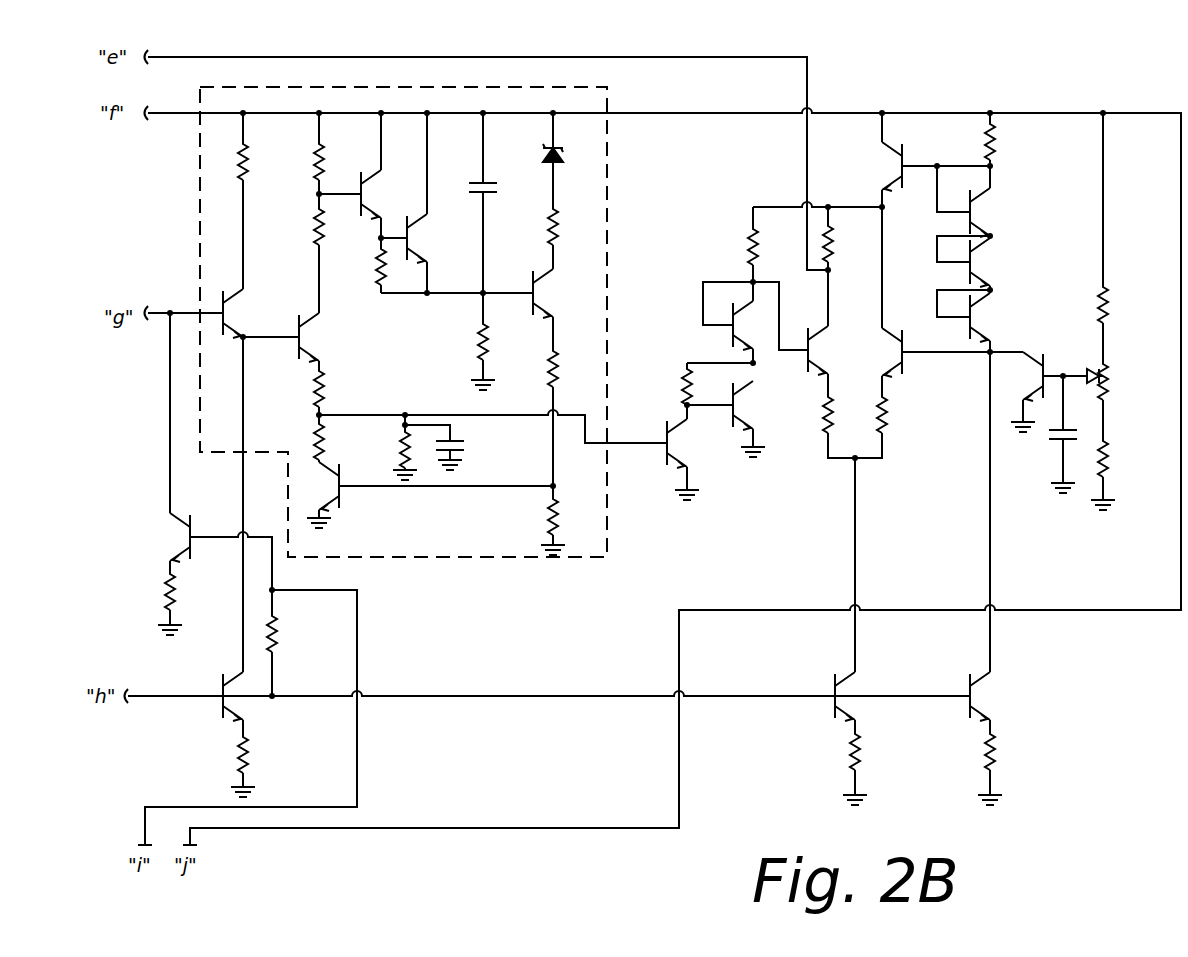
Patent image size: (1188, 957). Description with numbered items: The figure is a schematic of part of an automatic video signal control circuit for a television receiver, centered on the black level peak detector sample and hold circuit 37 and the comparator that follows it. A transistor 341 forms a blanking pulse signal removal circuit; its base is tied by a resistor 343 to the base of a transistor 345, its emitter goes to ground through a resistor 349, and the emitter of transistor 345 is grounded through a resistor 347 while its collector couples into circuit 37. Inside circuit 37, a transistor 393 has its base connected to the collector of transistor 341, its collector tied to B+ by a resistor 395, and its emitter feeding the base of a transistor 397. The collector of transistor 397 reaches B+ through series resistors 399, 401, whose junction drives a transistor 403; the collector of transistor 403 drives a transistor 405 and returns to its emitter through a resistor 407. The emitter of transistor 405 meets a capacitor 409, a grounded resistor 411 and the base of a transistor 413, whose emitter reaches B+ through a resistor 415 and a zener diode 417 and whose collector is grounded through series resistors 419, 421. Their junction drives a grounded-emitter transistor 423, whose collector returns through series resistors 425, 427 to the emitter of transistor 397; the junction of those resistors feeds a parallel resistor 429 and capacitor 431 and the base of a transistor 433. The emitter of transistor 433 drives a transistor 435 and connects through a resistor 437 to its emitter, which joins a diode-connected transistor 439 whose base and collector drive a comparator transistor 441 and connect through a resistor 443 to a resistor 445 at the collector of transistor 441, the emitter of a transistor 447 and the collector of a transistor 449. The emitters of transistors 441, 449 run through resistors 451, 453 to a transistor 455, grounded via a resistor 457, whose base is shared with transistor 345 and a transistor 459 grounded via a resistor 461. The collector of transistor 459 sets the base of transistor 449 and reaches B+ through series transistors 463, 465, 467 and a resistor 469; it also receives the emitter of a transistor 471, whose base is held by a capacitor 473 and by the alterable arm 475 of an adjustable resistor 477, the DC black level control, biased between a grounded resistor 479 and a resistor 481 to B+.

The black level peak detector sample and hold circuit 37 is at (612, 101).
The transistor 341 is at (182, 549).
The resistor 343 is at (278, 641).
The transistor 345 is at (213, 692).
The resistor 347 is at (250, 748).
The resistor 349 is at (178, 600).
The transistor 393 is at (262, 322).
The resistor 395 is at (245, 168).
The transistor 397 is at (320, 340).
The resistor 399 is at (297, 253).
The resistor 401 is at (314, 165).
The transistor 403 is at (404, 209).
The transistor 405 is at (449, 251).
The resistor 407 is at (375, 268).
The capacitor 409 is at (496, 195).
The resistor 411 is at (501, 341).
The transistor 413 is at (576, 306).
The resistor 415 is at (575, 225).
The zener diode 417 is at (565, 150).
The resistor 419 is at (574, 416).
The resistor 421 is at (548, 518).
The transistor 423 is at (327, 500).
The resistor 425 is at (316, 440).
The resistor 427 is at (327, 381).
The resistor 429 is at (400, 446).
The capacitor 431 is at (466, 441).
The transistor 433 is at (712, 455).
The transistor 435 is at (775, 416).
The resistor 437 is at (682, 380).
The diode-connected transistor 439 is at (774, 336).
The transistor 441 is at (844, 361).
The resistor 443 is at (748, 251).
The resistor 445 is at (834, 250).
The transistor 447 is at (889, 178).
The transistor 449 is at (889, 362).
The resistor 451 is at (824, 430).
The resistor 453 is at (886, 410).
The transistor 455 is at (820, 693).
The resistor 457 is at (860, 750).
The transistor 459 is at (1014, 701).
The resistor 461 is at (995, 748).
The transistor 463 is at (1019, 326).
The transistor 465 is at (1019, 272).
The transistor 467 is at (1019, 222).
The resistor 469 is at (998, 142).
The transistor 471 is at (1034, 386).
The capacitor 473 is at (1050, 448).
The alterable arm 475 is at (1087, 370).
The adjustable resistor 477 is at (1108, 380).
The resistor 479 is at (1108, 455).
The resistor 481 is at (1108, 302).